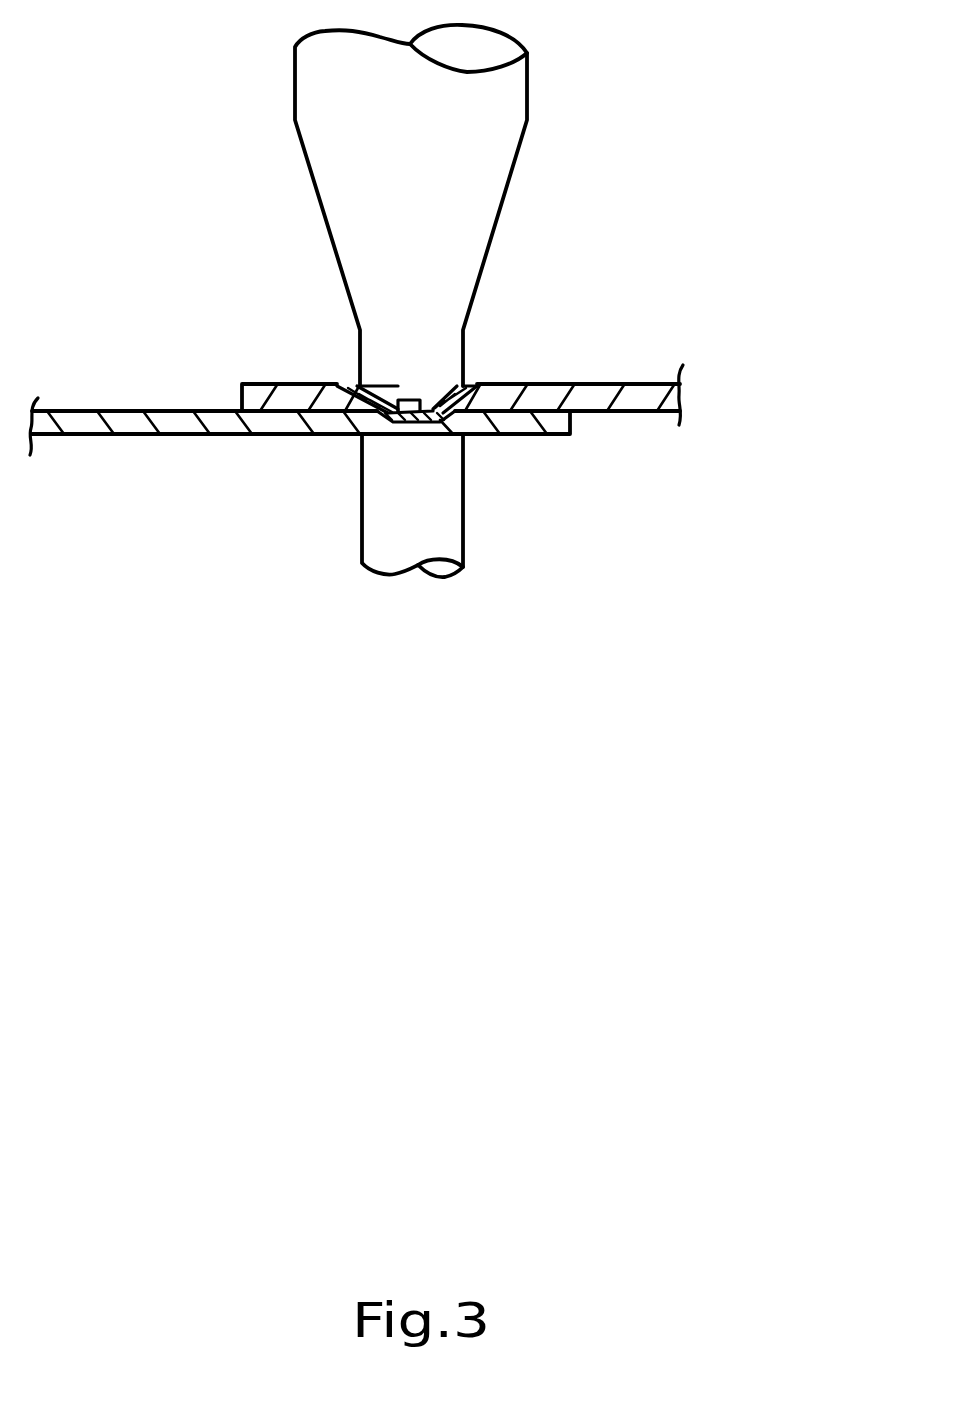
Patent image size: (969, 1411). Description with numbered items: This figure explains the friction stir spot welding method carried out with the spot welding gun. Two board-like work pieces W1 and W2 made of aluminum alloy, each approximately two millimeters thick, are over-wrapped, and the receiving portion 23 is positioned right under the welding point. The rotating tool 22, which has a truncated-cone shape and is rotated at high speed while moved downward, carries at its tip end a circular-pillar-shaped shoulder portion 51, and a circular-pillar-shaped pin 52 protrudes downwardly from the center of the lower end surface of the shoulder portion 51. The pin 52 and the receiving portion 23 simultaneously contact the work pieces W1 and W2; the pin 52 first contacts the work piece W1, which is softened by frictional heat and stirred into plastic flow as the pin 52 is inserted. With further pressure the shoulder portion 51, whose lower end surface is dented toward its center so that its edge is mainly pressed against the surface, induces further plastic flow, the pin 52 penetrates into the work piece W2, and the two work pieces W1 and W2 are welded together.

The rotating tool 22 is at (502, 100).
The receiving portion 23 is at (388, 502).
The shoulder portion 51 is at (438, 355).
The pin 52 is at (410, 393).
The work piece W1 is at (647, 393).
The work piece W2 is at (545, 422).